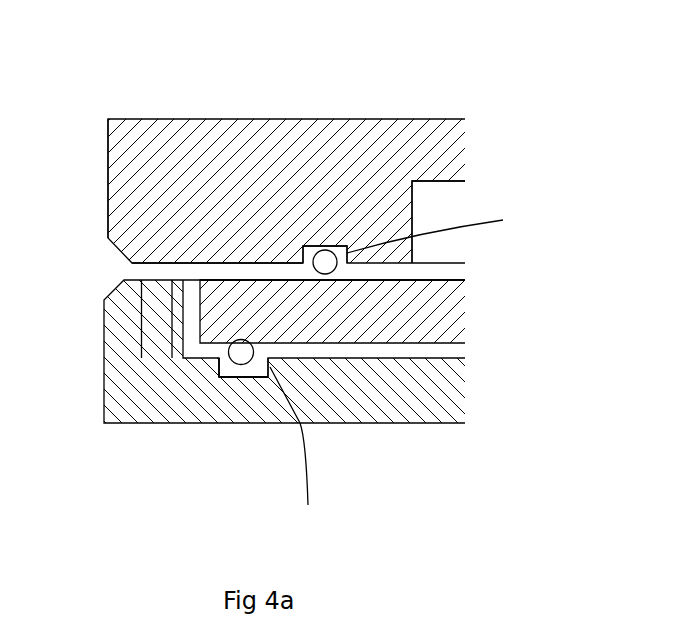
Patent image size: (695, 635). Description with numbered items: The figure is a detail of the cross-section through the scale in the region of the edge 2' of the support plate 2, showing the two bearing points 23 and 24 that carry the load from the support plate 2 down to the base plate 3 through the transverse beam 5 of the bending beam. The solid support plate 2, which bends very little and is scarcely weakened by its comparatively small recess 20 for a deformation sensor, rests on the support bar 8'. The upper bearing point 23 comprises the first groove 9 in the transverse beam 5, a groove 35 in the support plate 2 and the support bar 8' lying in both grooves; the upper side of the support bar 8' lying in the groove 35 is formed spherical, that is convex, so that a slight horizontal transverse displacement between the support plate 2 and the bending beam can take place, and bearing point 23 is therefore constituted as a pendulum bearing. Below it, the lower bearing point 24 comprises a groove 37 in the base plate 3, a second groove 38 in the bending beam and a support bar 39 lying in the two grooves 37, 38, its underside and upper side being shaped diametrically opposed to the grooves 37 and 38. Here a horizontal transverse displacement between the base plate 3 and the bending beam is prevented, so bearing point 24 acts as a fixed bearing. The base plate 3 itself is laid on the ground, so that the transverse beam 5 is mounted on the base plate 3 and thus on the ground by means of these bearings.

The support plate 2 is at (286, 191).
The edge 2' is at (97, 141).
The base plate 3 is at (447, 386).
The transverse beam 5 is at (430, 323).
The support bar 8' is at (358, 154).
The first groove 9 is at (330, 287).
The recess 20 is at (428, 184).
The bearing point 23 is at (323, 200).
The bearing point 24 is at (244, 398).
The groove 35 is at (322, 276).
The groove 37 is at (229, 371).
The second groove 38 is at (237, 338).
The support bar 39 is at (240, 354).